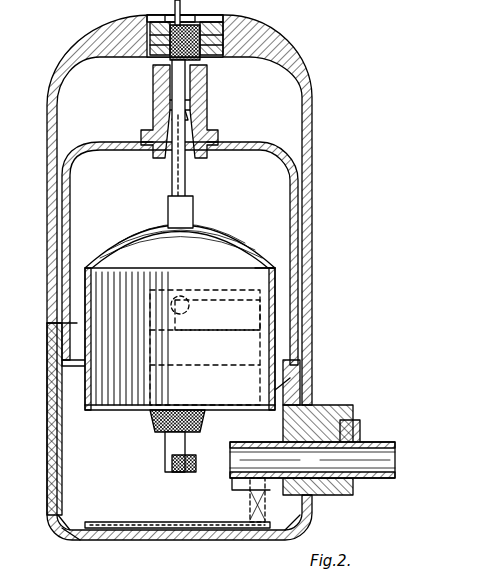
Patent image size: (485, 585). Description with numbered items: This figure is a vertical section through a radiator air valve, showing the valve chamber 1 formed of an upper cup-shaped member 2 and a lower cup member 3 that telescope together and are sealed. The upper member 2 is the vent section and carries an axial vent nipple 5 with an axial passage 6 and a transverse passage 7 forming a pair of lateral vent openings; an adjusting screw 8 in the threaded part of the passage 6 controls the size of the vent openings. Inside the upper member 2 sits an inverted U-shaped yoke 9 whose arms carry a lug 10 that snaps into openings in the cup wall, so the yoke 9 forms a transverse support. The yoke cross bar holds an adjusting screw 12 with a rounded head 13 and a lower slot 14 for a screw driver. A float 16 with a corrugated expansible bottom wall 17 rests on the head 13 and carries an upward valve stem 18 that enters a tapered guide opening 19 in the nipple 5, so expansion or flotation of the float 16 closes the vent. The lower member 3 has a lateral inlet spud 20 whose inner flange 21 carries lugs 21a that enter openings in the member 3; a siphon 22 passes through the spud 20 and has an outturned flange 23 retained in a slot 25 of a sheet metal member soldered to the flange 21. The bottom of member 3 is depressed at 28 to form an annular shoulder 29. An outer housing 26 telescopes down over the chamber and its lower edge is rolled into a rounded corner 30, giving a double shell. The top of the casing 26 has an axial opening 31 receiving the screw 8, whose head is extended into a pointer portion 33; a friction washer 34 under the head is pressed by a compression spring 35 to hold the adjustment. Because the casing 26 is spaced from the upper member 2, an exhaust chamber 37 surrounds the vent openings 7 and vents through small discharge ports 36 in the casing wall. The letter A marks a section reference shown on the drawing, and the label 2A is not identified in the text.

The valve chamber 1 is at (72, 215).
The upper cup-shaped member 2 is at (62, 195).
The collar 2A is at (355, 426).
The lower cup member 3 is at (52, 438).
The vent nipple 5 is at (205, 120).
The axial passage 6 is at (206, 100).
The transverse passage 7 is at (158, 86).
The adjusting screw 8 is at (200, 20).
The yoke 9 is at (222, 314).
The lug 10 is at (212, 300).
The adjusting screw 12 is at (162, 476).
The rounded head 13 is at (152, 420).
The slot 14 is at (180, 478).
The float 16 is at (272, 268).
The bottom wall 17 is at (300, 342).
The valve stem 18 is at (190, 188).
The tapered guide opening 19 is at (215, 138).
The inlet spud 20 is at (340, 407).
The flange 21 is at (296, 374).
The lugs 21a is at (305, 382).
The siphon 22 is at (373, 479).
The outturned flange 23 is at (255, 480).
The slot 25 is at (246, 512).
The outer housing 26 is at (316, 90).
The depressed bottom 28 is at (112, 540).
The annular shoulder 29 is at (82, 538).
The rounded corner 30 is at (72, 538).
The axial opening 31 is at (215, 48).
The pointer portion 33 is at (222, 24).
The friction washer 34 is at (160, 20).
The compression spring 35 is at (98, 44).
The discharge ports 36 is at (306, 176).
The exhaust chamber 37 is at (285, 128).
The section line A is at (163, 11).